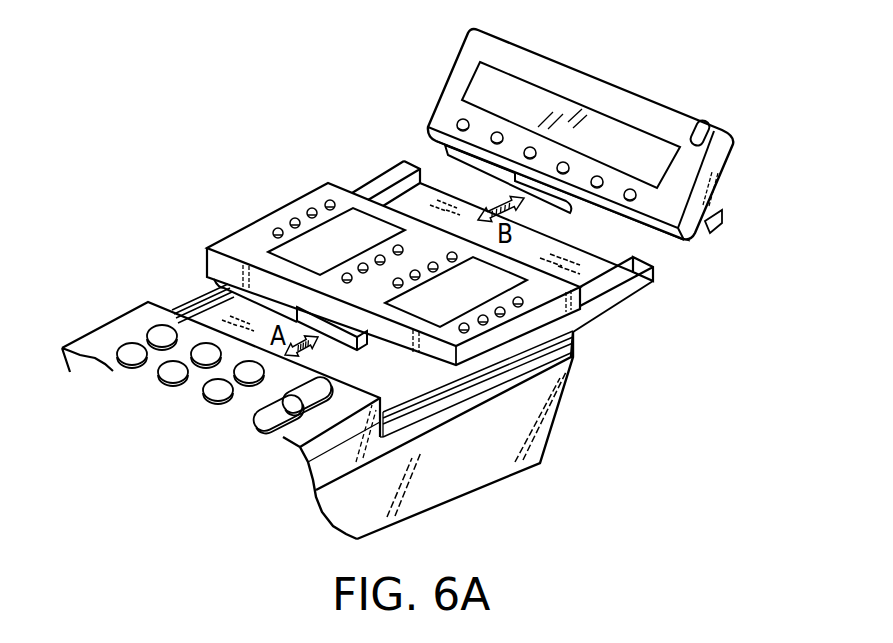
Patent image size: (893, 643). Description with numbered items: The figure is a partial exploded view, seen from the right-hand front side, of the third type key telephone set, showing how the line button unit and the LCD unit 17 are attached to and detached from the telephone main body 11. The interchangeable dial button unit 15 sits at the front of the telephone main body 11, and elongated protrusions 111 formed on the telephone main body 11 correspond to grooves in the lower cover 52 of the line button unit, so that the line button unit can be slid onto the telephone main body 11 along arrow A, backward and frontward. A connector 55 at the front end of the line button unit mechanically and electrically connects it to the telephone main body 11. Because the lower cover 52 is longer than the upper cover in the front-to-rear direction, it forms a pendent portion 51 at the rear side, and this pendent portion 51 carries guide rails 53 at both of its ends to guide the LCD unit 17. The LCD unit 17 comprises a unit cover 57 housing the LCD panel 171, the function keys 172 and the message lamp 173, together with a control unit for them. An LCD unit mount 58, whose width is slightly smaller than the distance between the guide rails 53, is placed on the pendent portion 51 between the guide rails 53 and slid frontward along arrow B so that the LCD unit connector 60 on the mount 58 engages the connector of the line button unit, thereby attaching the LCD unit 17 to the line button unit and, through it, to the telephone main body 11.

The telephone main body 11 is at (483, 473).
The dial button unit 15 is at (93, 342).
The LCD unit 17 is at (570, 78).
The pendent portion 51 is at (432, 202).
The lower cover 52 is at (403, 352).
The guide rails 53 is at (385, 178).
The connector 55 is at (341, 338).
The unit cover 57 is at (690, 243).
The LCD unit mount 58 is at (722, 226).
The LCD unit connector 60 is at (552, 203).
The elongated protrusions 111 is at (212, 302).
The LCD panel 171 is at (610, 135).
The function keys 172 is at (459, 122).
The message lamp 173 is at (700, 120).